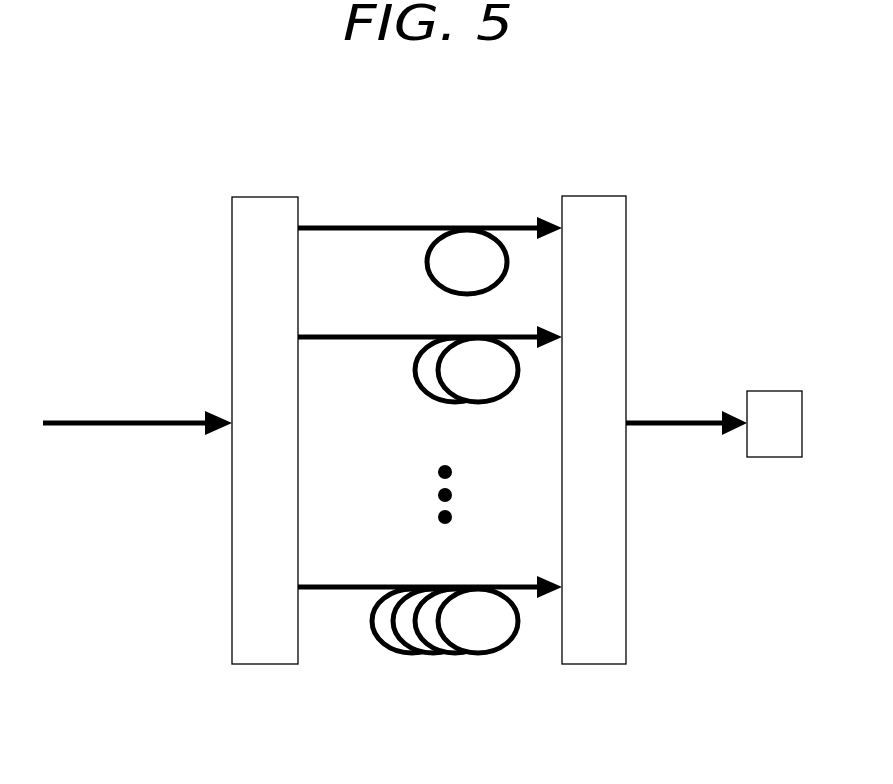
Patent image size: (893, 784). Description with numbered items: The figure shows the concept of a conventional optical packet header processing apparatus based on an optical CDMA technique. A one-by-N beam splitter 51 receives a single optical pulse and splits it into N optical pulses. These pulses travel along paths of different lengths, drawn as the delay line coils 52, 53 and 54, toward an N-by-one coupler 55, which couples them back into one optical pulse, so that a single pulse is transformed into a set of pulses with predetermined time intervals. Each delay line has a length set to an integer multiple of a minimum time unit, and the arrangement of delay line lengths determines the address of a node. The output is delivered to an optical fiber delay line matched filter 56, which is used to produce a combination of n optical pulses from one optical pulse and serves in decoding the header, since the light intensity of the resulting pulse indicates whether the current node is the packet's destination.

The 1×N beam splitter 51 is at (280, 664).
The first delay line (tau 1) 52 is at (455, 228).
The second delay line (tau 2) 53 is at (488, 403).
The n-th delay line (tau n) 54 is at (420, 653).
The N×1 coupler 55 is at (590, 664).
The optical fiber delay line matched filter 56 is at (768, 391).